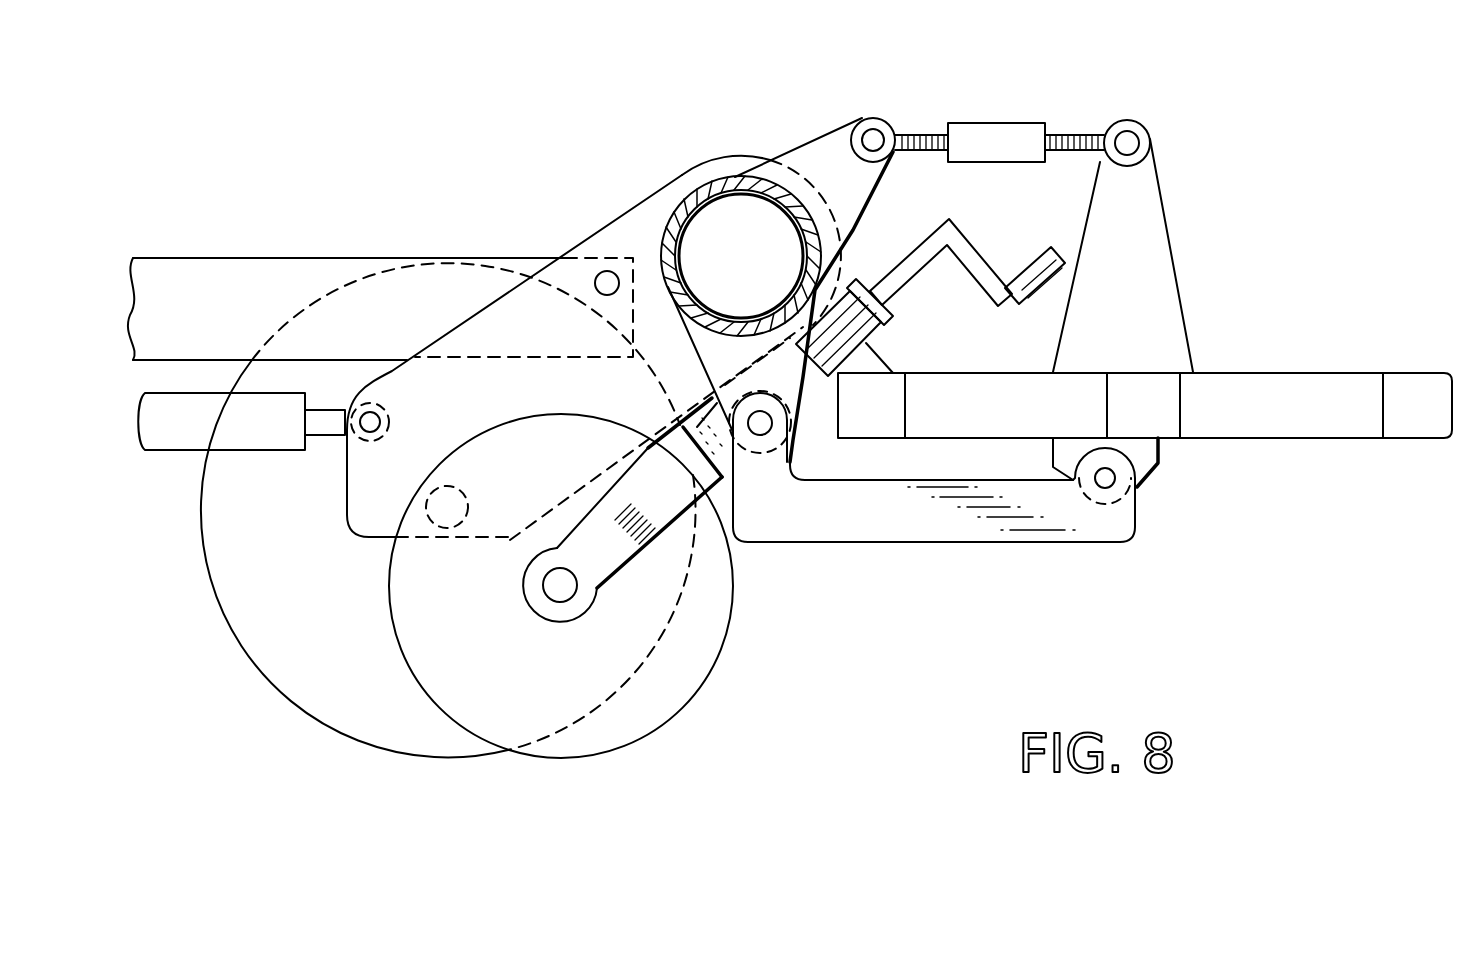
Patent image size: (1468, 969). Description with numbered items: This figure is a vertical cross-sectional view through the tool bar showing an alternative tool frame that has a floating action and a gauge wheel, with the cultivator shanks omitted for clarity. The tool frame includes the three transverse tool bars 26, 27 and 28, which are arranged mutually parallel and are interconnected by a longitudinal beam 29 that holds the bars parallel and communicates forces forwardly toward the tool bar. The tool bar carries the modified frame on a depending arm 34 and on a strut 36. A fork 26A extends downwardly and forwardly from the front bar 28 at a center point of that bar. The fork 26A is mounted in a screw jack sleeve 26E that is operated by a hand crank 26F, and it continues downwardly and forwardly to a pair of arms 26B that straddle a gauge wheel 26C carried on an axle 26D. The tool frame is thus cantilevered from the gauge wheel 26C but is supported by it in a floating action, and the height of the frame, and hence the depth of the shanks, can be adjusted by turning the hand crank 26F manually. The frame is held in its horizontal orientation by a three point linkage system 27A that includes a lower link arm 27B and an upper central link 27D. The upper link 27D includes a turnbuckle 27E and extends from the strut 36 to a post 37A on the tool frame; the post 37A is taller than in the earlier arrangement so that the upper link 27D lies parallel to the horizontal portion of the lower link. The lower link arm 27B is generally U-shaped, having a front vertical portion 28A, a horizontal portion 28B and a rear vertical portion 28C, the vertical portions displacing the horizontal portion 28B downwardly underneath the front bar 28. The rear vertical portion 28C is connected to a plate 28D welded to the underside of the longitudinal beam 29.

The transverse bar 26 is at (1410, 387).
The fork 26A is at (737, 478).
The pair of arms 26B is at (615, 512).
The gauge wheel 26C is at (712, 668).
The axle 26D is at (557, 583).
The screw jack sleeve 26E is at (885, 335).
The hand crank 26F is at (962, 232).
The transverse bar 27 is at (1172, 410).
The three point linkage system 27A is at (1082, 82).
The lower link arm 27B is at (1003, 552).
The upper central link 27D is at (1003, 122).
The turnbuckle 27E is at (1010, 148).
The front bar 28 is at (898, 413).
The front vertical portion 28A is at (797, 436).
The horizontal portion 28B is at (937, 512).
The rear vertical portion 28C is at (1140, 481).
The plate 28D is at (1158, 455).
The longitudinal beam 29 is at (1293, 448).
The depending arm 34 is at (710, 373).
The strut 36 is at (820, 155).
The post 37A is at (1152, 208).